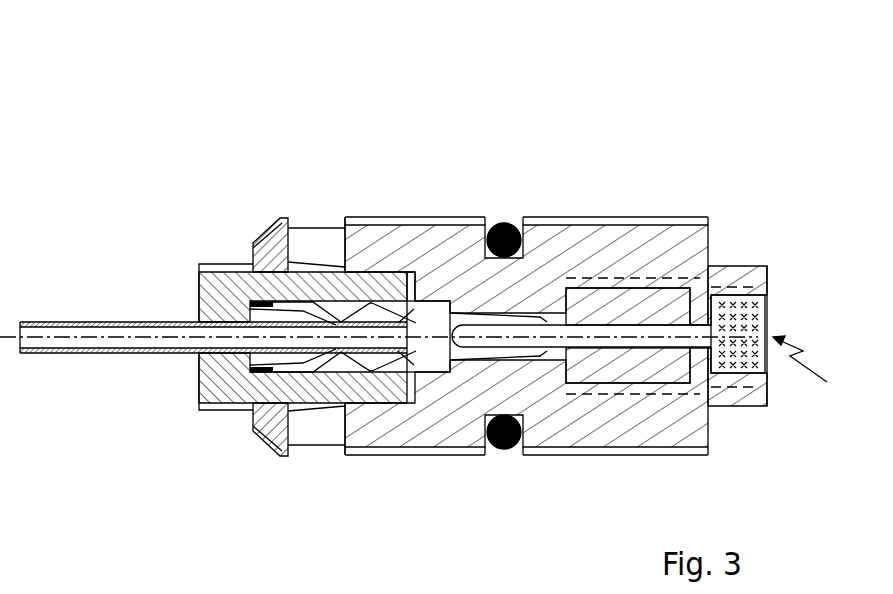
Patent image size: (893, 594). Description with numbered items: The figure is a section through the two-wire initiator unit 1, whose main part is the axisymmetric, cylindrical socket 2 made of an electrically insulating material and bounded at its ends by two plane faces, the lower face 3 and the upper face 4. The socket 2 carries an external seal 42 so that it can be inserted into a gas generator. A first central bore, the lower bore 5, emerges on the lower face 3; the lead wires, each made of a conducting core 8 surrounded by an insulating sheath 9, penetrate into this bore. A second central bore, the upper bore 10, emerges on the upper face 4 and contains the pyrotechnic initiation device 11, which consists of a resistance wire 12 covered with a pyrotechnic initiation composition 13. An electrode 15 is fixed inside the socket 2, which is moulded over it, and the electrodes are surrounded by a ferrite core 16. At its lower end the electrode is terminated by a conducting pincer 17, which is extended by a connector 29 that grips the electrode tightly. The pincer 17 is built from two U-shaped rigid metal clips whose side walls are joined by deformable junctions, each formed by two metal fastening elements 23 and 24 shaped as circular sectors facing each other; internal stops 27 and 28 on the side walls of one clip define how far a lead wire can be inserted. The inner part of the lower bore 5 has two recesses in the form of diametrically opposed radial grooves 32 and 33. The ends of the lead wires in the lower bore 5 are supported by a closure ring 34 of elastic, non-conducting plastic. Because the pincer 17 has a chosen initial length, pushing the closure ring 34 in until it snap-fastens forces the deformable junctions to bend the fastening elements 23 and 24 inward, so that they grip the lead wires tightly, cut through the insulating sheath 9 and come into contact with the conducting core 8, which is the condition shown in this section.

The two-wire initiator unit 1 is at (535, 203).
The socket 2 is at (573, 248).
The lower plane face 3 is at (250, 253).
The upper plane face 4 is at (768, 280).
The lower bore 5 is at (428, 352).
The conducting core 8 is at (117, 337).
The insulating sheath 9 is at (40, 322).
The upper bore 10 is at (738, 374).
The pyrotechnic initiation device 11 is at (810, 359).
The resistance wire 12 is at (748, 323).
The pyrotechnic initiation composition 13 is at (744, 351).
The electrode 15 is at (612, 340).
The ferrite core 16 is at (625, 305).
The conducting pincer 17 is at (425, 298).
The metal fastening element 23 is at (302, 247).
The metal fastening element 24 is at (347, 318).
The internal stop 27 is at (420, 296).
The internal stop 28 is at (438, 355).
The connector 29 is at (538, 352).
The radial groove 32 is at (318, 301).
The radial groove 33 is at (320, 432).
The closure ring 34 is at (228, 397).
The external seal 42 is at (511, 217).